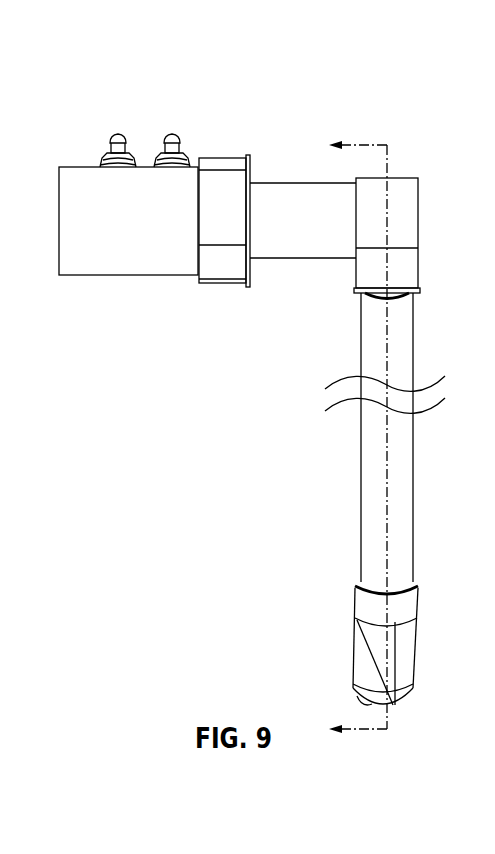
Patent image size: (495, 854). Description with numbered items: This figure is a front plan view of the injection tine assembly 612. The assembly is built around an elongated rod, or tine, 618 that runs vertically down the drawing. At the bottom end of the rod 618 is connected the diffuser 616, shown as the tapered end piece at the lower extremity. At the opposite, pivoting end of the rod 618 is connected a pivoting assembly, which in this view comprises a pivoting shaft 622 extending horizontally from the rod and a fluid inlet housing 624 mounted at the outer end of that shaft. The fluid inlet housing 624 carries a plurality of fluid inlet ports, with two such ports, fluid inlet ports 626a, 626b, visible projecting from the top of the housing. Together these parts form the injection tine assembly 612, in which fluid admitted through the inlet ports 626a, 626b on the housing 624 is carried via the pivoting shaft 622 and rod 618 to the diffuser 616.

The injection tine assembly 612 is at (322, 82).
The diffuser 616 is at (410, 640).
The rod 618 is at (413, 473).
The pivoting shaft 622 is at (302, 244).
The fluid inlet housing 624 is at (105, 255).
The fluid inlet port 626a is at (114, 134).
The fluid inlet port 626b is at (168, 134).